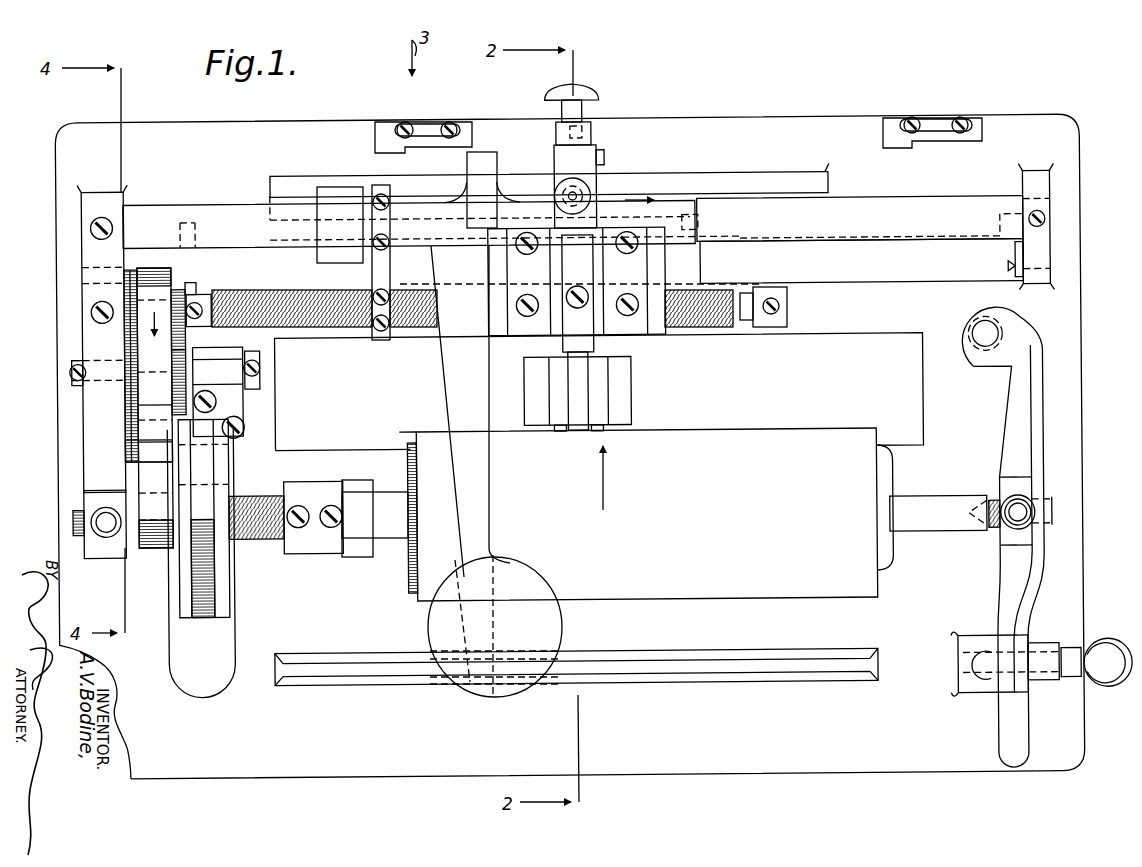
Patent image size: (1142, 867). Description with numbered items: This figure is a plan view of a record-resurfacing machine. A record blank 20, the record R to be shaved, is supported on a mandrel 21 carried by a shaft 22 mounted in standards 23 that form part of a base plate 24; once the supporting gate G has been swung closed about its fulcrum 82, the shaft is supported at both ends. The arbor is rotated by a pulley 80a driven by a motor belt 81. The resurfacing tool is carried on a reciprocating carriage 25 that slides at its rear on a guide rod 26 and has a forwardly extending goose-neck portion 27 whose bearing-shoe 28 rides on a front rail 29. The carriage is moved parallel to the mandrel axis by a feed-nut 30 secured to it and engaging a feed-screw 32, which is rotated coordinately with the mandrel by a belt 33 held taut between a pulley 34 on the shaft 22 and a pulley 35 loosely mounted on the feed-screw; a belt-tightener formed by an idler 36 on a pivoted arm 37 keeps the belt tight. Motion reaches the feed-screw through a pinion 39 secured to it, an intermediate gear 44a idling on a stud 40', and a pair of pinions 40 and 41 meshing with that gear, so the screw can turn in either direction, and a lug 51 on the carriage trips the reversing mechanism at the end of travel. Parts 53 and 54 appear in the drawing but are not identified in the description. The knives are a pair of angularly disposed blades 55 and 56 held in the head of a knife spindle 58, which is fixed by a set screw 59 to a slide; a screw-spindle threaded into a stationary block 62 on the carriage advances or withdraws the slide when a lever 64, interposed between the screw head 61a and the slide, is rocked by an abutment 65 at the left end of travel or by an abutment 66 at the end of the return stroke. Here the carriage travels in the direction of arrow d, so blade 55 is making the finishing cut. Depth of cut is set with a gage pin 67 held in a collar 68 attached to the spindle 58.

The record blank 20 is at (741, 431).
The mandrel 21 is at (407, 595).
The shaft 22 is at (395, 540).
The standards 23 is at (103, 560).
The base plate 24 is at (232, 776).
The reciprocating carriage 25 is at (338, 192).
The guide rod 26 is at (232, 214).
The goose-neck portion 27 is at (490, 481).
The bearing-shoe 28 is at (458, 686).
The front rail 29 is at (400, 686).
The feed-nut 30 is at (397, 340).
The feed-screw 32 is at (339, 328).
The belt 33 is at (158, 282).
The pulley 34 is at (142, 550).
The pulley 35 is at (137, 270).
The idler 36 is at (147, 455).
The arm 37 is at (127, 415).
The pinion 39 is at (198, 287).
The pinion 40 is at (219, 392).
The stud 40' is at (258, 385).
The pinion 41 is at (187, 372).
The intermediate gear 44a is at (187, 344).
The lug 51 is at (692, 188).
The clamp block 53 is at (370, 268).
The screw block 54 is at (214, 298).
The knife blade 55 is at (598, 432).
The knife blade 56 is at (556, 432).
The spindle 58 is at (583, 127).
The set screw 59 is at (585, 188).
The screw head 61a is at (593, 136).
The stationary block 62 is at (640, 268).
The lever 64 is at (556, 160).
The abutment 65 is at (378, 151).
The abutment 66 is at (886, 149).
The gage pin 67 is at (584, 383).
The collar 68 is at (594, 342).
The pulley 80a is at (229, 574).
The belt 81 is at (205, 612).
The fulcrum 82 is at (982, 340).
The supporting gate G is at (1000, 538).
The record R is at (632, 455).
The arrow d is at (643, 192).